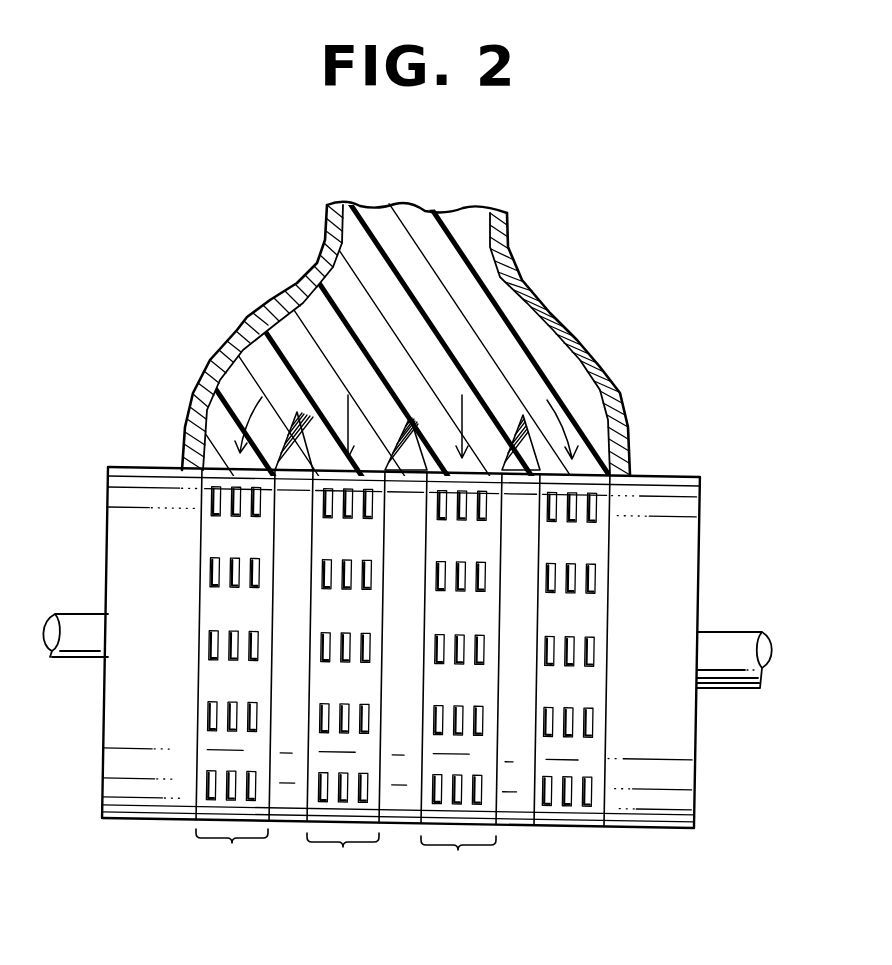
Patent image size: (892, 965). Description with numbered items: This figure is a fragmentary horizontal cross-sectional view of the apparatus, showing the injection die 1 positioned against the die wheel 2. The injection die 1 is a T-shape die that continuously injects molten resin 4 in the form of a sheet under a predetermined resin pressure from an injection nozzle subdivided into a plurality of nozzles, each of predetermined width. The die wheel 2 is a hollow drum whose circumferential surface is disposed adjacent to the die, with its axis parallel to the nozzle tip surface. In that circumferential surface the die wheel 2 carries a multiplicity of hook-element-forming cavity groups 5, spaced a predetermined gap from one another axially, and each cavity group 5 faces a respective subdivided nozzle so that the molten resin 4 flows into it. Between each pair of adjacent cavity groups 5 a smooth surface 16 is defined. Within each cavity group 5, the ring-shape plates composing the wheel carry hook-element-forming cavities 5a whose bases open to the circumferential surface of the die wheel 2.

The injection die 1 is at (560, 323).
The die wheel 2 is at (665, 503).
The molten resin 4 is at (425, 217).
The hook-element-forming cavity groups 5 is at (403, 680).
The hook-element-forming cavities 5a is at (586, 807).
The smooth surface 16 is at (289, 812).